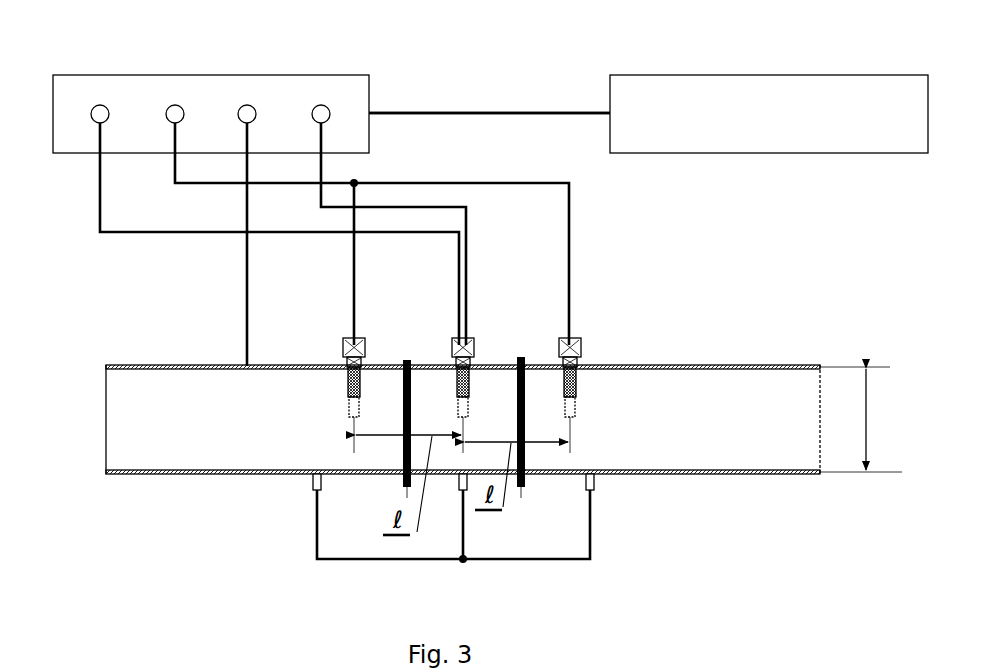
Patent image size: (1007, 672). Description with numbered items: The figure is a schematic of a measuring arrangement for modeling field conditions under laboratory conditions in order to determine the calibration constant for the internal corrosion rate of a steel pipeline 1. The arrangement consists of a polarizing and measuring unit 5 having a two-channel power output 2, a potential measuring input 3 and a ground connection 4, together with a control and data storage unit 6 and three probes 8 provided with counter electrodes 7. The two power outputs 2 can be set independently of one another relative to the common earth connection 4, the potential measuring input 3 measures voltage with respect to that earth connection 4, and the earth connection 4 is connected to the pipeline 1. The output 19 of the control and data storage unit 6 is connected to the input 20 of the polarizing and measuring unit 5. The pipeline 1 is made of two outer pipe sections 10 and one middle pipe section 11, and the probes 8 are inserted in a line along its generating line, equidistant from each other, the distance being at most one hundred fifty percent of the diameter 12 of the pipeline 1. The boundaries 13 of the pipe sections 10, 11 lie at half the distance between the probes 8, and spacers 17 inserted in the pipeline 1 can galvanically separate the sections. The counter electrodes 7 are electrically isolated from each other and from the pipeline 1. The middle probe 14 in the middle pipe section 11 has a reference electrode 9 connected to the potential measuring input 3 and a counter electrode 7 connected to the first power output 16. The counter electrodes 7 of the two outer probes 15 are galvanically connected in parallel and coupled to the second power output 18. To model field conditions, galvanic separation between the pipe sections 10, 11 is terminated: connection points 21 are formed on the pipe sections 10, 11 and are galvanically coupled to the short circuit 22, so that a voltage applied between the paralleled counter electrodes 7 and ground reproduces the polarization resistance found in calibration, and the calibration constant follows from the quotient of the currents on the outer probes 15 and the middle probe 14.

The pipeline 1 is at (504, 382).
The two-channel power output 2 is at (107, 107).
The potential measuring input 3 is at (317, 106).
The ground connection 4 is at (245, 106).
The polarizing and measuring unit 5 is at (328, 75).
The control and data storage unit 6 is at (745, 127).
The counter electrode 7 is at (350, 403).
The probe 8 is at (476, 311).
The reference electrode 9 is at (473, 334).
The outer pipe section 10 is at (210, 367).
The middle pipe section 11 is at (455, 366).
The diameter 12 is at (866, 430).
The boundary 13 is at (453, 406).
The middle probe 14 is at (480, 311).
The outer probe 15 is at (335, 325).
The first power output 16 is at (98, 122).
The spacer 17 is at (401, 465).
The second power output 18 is at (166, 106).
The output 19 is at (609, 113).
The input 20 is at (370, 113).
The connection point 21 is at (313, 482).
The short circuit 22 is at (407, 559).